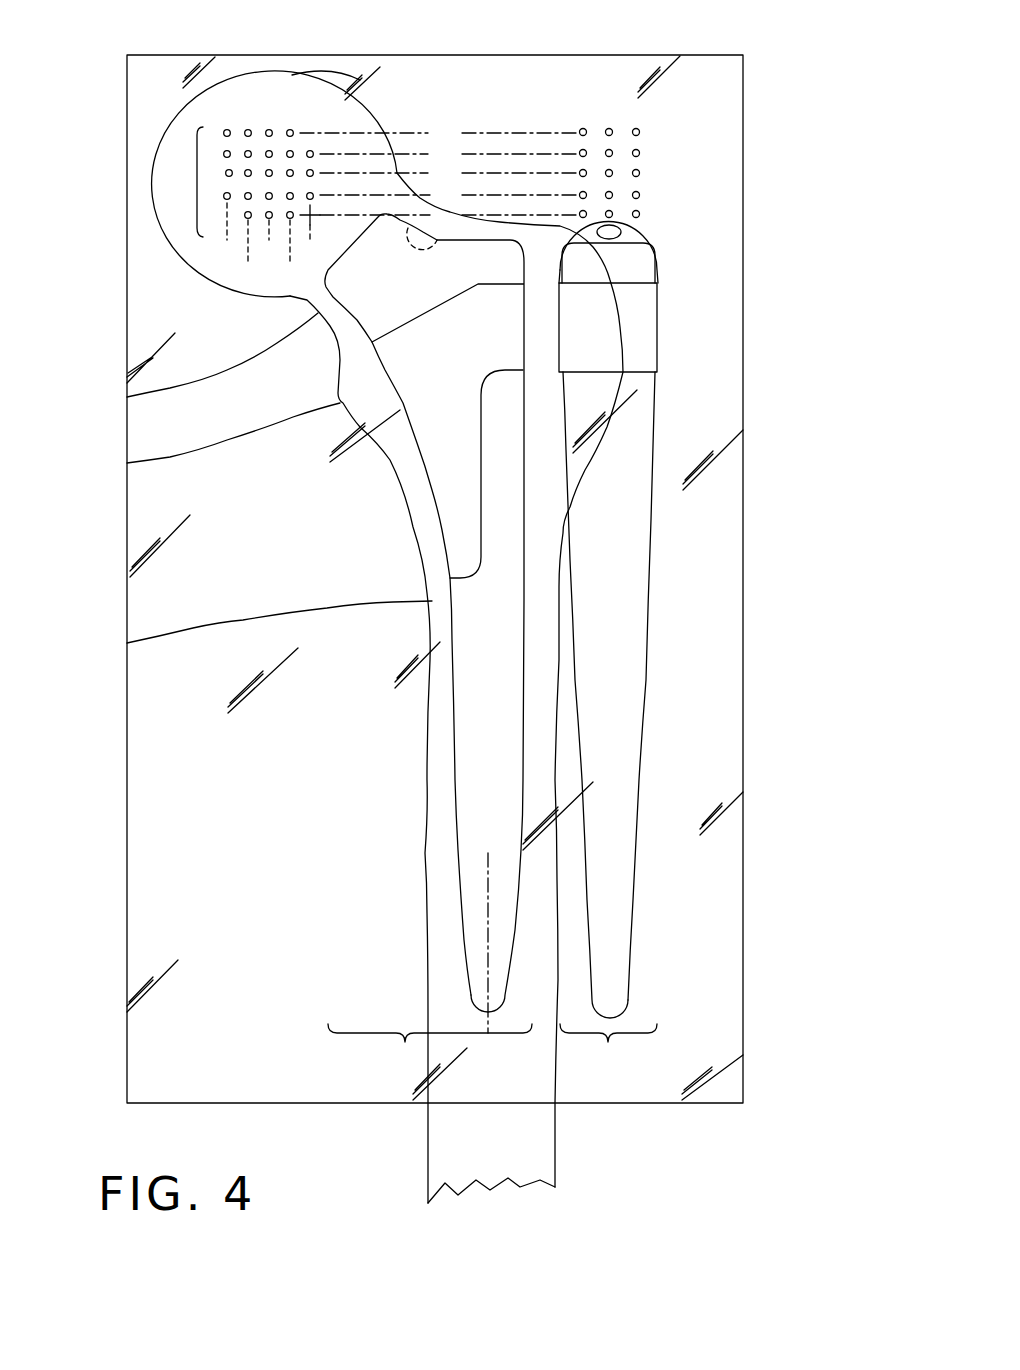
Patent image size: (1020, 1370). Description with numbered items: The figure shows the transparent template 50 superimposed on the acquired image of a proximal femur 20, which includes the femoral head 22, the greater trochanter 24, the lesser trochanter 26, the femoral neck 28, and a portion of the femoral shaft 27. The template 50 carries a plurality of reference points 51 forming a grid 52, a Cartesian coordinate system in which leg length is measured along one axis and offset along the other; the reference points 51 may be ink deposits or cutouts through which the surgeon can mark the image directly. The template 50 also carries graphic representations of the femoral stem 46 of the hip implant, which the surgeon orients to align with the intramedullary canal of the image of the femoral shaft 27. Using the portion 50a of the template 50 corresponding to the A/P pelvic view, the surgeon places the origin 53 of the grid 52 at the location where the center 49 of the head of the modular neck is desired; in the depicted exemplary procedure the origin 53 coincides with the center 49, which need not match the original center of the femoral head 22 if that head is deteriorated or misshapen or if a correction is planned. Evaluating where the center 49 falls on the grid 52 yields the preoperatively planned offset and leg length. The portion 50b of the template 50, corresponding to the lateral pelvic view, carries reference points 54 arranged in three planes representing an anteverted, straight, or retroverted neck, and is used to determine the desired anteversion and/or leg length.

The proximal femur 20 is at (236, 62).
The femoral head 22 is at (292, 75).
The greater trochanter 24 is at (613, 270).
The lesser trochanter 26 is at (127, 463).
The femoral shaft 27 is at (127, 643).
The femoral neck 28 is at (127, 397).
The stem 46 is at (402, 456).
The center 49 is at (253, 182).
The template 50 is at (725, 160).
The portion of template 50a is at (428, 644).
The portion of template 50b is at (608, 678).
The reference points 51 is at (268, 128).
The grid 52 is at (197, 175).
The origin 53 is at (267, 178).
The reference points 54 is at (612, 128).